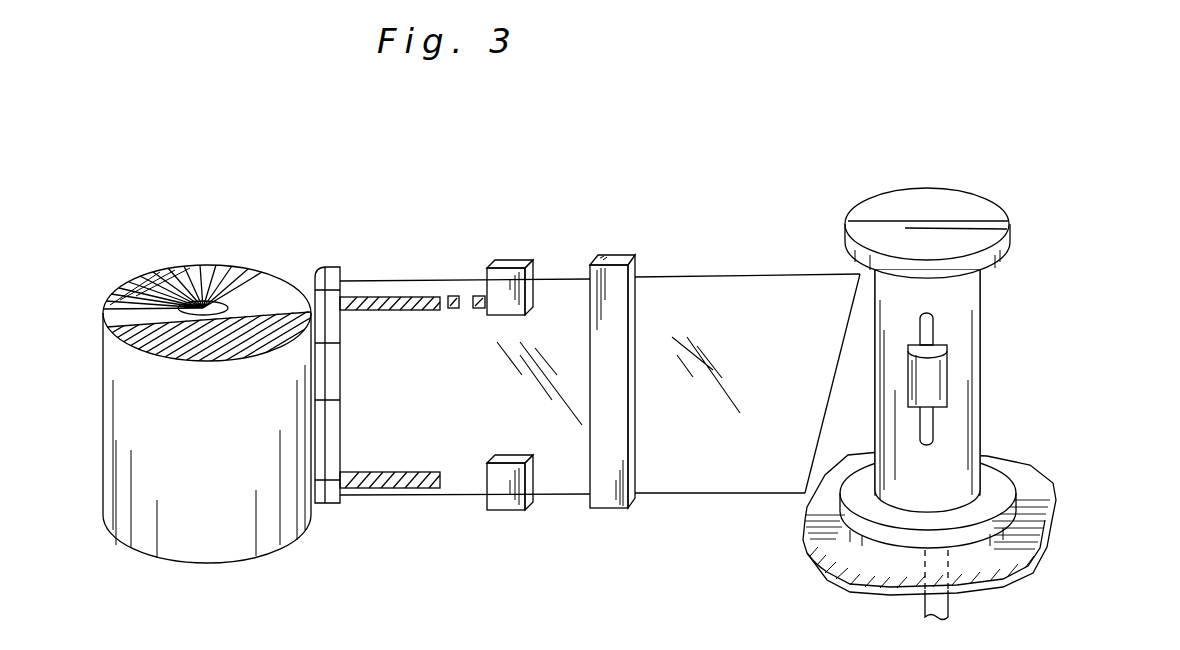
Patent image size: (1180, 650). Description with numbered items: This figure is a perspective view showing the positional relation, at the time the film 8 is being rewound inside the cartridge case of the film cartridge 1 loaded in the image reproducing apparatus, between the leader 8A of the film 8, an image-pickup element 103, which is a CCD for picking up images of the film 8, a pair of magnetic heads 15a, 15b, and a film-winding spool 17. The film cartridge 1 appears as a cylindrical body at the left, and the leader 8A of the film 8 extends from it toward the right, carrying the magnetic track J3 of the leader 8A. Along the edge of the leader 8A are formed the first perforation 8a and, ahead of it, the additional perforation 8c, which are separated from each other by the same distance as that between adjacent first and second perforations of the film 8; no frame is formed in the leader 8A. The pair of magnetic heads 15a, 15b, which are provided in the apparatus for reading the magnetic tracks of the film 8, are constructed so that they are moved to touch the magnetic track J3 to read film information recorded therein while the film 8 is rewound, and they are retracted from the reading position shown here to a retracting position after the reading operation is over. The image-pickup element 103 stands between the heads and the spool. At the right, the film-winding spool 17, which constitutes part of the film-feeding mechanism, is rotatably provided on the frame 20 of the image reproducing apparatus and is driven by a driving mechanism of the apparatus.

The film cartridge 1 is at (214, 495).
The film 8 is at (357, 279).
The magnetic track J3 is at (372, 472).
The first perforation 8a is at (452, 296).
The additional perforation 8c is at (477, 296).
The magnetic head 15a is at (520, 262).
The magnetic head 15b is at (525, 508).
The image-pickup element 103 is at (617, 257).
The leader 8A is at (793, 553).
The film-winding spool 17 is at (972, 207).
The frame 20 is at (1040, 512).